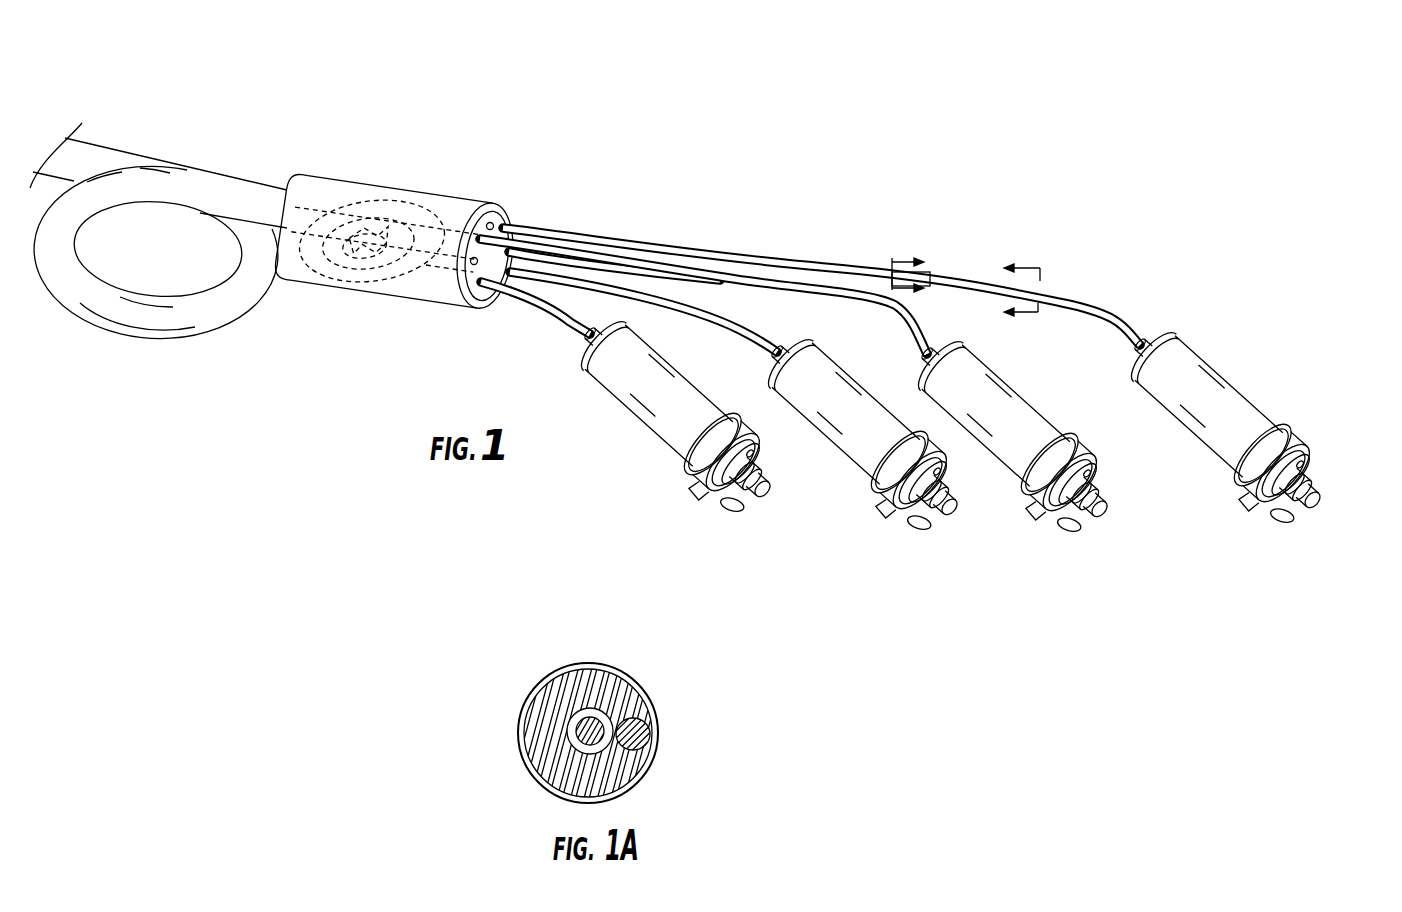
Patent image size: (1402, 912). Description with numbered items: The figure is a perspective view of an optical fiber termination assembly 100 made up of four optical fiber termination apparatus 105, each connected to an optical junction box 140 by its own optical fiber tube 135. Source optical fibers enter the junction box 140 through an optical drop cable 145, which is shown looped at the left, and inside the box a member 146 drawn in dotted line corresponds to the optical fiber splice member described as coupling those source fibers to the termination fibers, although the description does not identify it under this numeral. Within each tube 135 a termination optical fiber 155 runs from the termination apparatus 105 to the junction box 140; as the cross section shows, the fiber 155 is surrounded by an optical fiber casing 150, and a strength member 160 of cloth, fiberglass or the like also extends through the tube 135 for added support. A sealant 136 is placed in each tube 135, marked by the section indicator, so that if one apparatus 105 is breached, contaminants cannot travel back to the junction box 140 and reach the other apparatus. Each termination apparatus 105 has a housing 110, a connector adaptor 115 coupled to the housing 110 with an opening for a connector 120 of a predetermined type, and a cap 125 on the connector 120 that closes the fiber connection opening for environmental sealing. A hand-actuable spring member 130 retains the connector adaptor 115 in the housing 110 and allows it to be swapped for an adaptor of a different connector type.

In FIG. 1, the optical fiber termination assembly 100 is at (572, 180).
In FIG. 1, the optical fiber termination apparatus 105 is at (671, 534).
In FIG. 1, the housing 110 is at (663, 450).
In FIG. 1, the connector adaptor 115 is at (1312, 465).
In FIG. 1, the connector 120 is at (1316, 484).
In FIG. 1, the cap 125 is at (1320, 510).
In FIG. 1, the spring member 130 is at (1296, 426).
In FIG. 1, the optical fiber tube 135 is at (560, 268).
In FIG. 1A, the optical fiber tube 135 is at (518, 712).
In FIG. 1, the sealant 136 is at (913, 277).
In FIG. 1A, the sealant 136 is at (570, 678).
In FIG. 1, the optical junction box 140 is at (467, 193).
In FIG. 1, the optical drop cable 145 is at (244, 181).
In FIG. 1, the internal passages 146 is at (363, 197).
In FIG. 1A, the optical fiber casing 150 is at (530, 763).
In FIG. 1A, the termination optical fiber 155 is at (604, 713).
In FIG. 1A, the strength member 160 is at (658, 727).